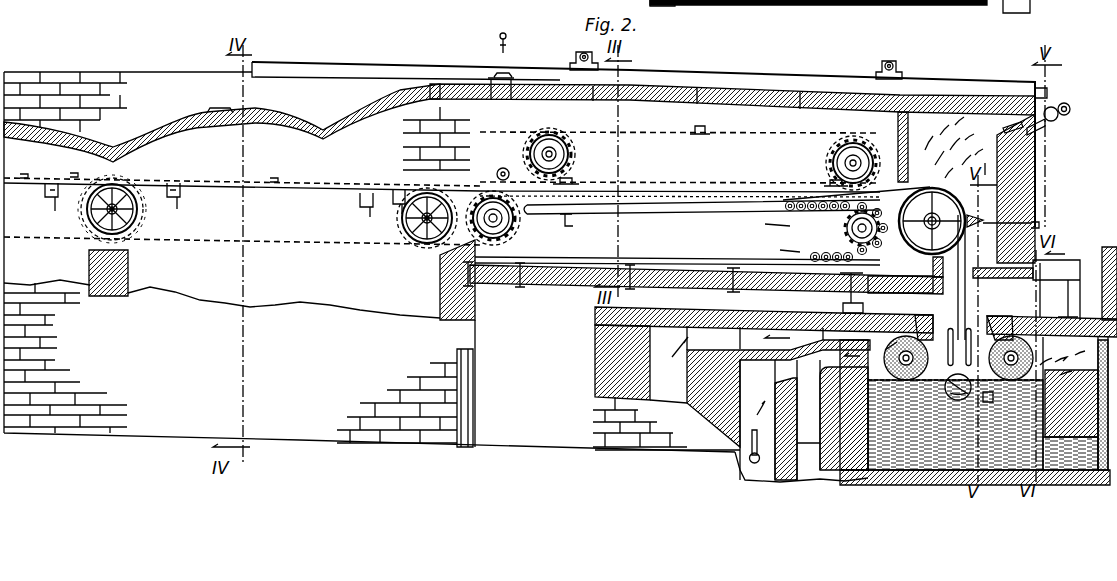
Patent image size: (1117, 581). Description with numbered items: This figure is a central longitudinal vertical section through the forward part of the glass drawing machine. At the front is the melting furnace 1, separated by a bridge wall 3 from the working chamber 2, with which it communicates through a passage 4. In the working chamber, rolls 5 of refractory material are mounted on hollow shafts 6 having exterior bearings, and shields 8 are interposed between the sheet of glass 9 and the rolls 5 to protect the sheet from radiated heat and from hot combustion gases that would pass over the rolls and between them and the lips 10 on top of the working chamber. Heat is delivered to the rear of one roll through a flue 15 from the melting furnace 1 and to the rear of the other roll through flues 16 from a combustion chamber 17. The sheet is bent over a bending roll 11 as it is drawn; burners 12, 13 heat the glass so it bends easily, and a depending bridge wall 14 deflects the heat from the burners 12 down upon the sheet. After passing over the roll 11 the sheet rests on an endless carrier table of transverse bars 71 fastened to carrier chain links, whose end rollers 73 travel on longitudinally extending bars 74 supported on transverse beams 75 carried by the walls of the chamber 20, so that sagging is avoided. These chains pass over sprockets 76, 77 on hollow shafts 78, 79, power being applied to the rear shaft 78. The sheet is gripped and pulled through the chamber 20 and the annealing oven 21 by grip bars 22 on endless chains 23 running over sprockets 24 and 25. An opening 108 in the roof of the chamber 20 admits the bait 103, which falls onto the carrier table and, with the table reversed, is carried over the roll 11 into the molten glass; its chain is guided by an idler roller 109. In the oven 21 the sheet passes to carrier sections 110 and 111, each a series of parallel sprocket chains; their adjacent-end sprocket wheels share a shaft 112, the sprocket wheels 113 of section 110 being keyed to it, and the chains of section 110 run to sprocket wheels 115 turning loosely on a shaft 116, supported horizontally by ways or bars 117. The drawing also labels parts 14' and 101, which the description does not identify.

The melting furnace 1 is at (1098, 462).
The working chamber 2 is at (914, 460).
The separating bridge wall 3 is at (1062, 381).
The communicating passage 4 is at (1076, 458).
The rolls 5 is at (909, 340).
The hollow shafts 6 is at (909, 361).
The shields 8 is at (950, 380).
The sheet of glass 9 is at (978, 314).
The lips 10 is at (948, 326).
The bending roll 11 is at (880, 292).
The burner 12 is at (975, 277).
The burner 13 is at (1044, 124).
The depending bridge wall 14 is at (883, 147).
The support block 14' is at (923, 267).
The flue 15 is at (1068, 346).
The flues 16 is at (830, 358).
The combustion chamber 17 is at (759, 420).
The drawing chamber 20 is at (752, 116).
The annealing oven 21 is at (176, 142).
The grip bars 22 is at (697, 131).
The endless chains 23 is at (850, 137).
The sprockets 24 is at (833, 161).
The sprockets 25 is at (580, 156).
The transverse bars 71 is at (874, 191).
The rollers 73 is at (790, 227).
The longitudinally extending bars 74 is at (725, 212).
The transverse beams 75 is at (567, 226).
The sprockets 76 is at (948, 139).
The sprockets 77 is at (513, 231).
The hollow shaft 78 is at (494, 224).
The hollow shaft 79 is at (783, 199).
The sprocket wheel 101 is at (551, 150).
The bait 103 is at (512, 41).
The opening 108 is at (502, 101).
The idler roller 109 is at (525, 137).
The carrier section 110 is at (242, 174).
The carrier section 111 is at (38, 169).
The shaft 112 is at (88, 212).
The sprocket wheels 113 is at (142, 216).
The sprocket wheels 115 is at (400, 226).
The shaft 116 is at (418, 244).
The ways or bars 117 is at (290, 192).